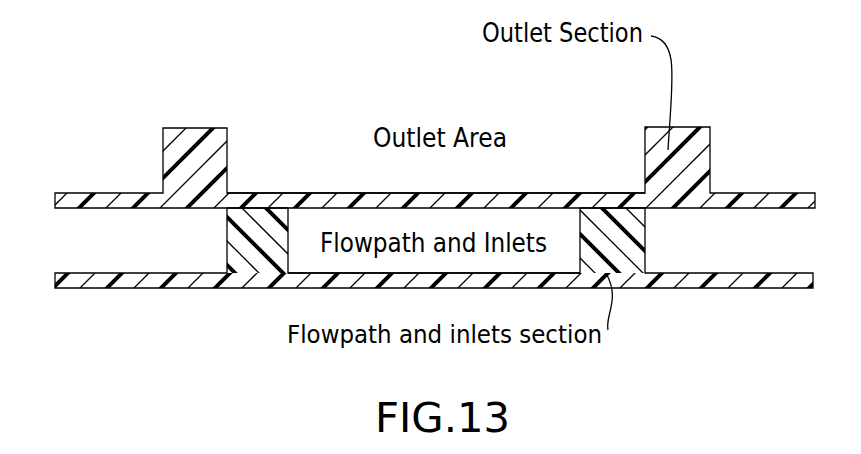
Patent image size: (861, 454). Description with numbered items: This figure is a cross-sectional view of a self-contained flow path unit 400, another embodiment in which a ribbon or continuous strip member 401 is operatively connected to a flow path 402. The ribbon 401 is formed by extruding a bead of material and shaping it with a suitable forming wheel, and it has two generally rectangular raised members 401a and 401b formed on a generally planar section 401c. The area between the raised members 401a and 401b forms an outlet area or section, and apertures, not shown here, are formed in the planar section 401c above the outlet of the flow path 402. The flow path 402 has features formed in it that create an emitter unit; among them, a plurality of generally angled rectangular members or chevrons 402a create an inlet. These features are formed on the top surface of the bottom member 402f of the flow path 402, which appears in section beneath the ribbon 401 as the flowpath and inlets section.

The self-contained flow path unit 400 is at (122, 168).
The ribbon or continuous strip member 401 is at (754, 192).
The raised member 401a is at (190, 140).
The raised member 401b is at (703, 136).
The planar section 401c is at (307, 192).
The flow path 402 is at (730, 290).
The chevrons 402a is at (227, 235).
The bottom member 402f is at (315, 290).